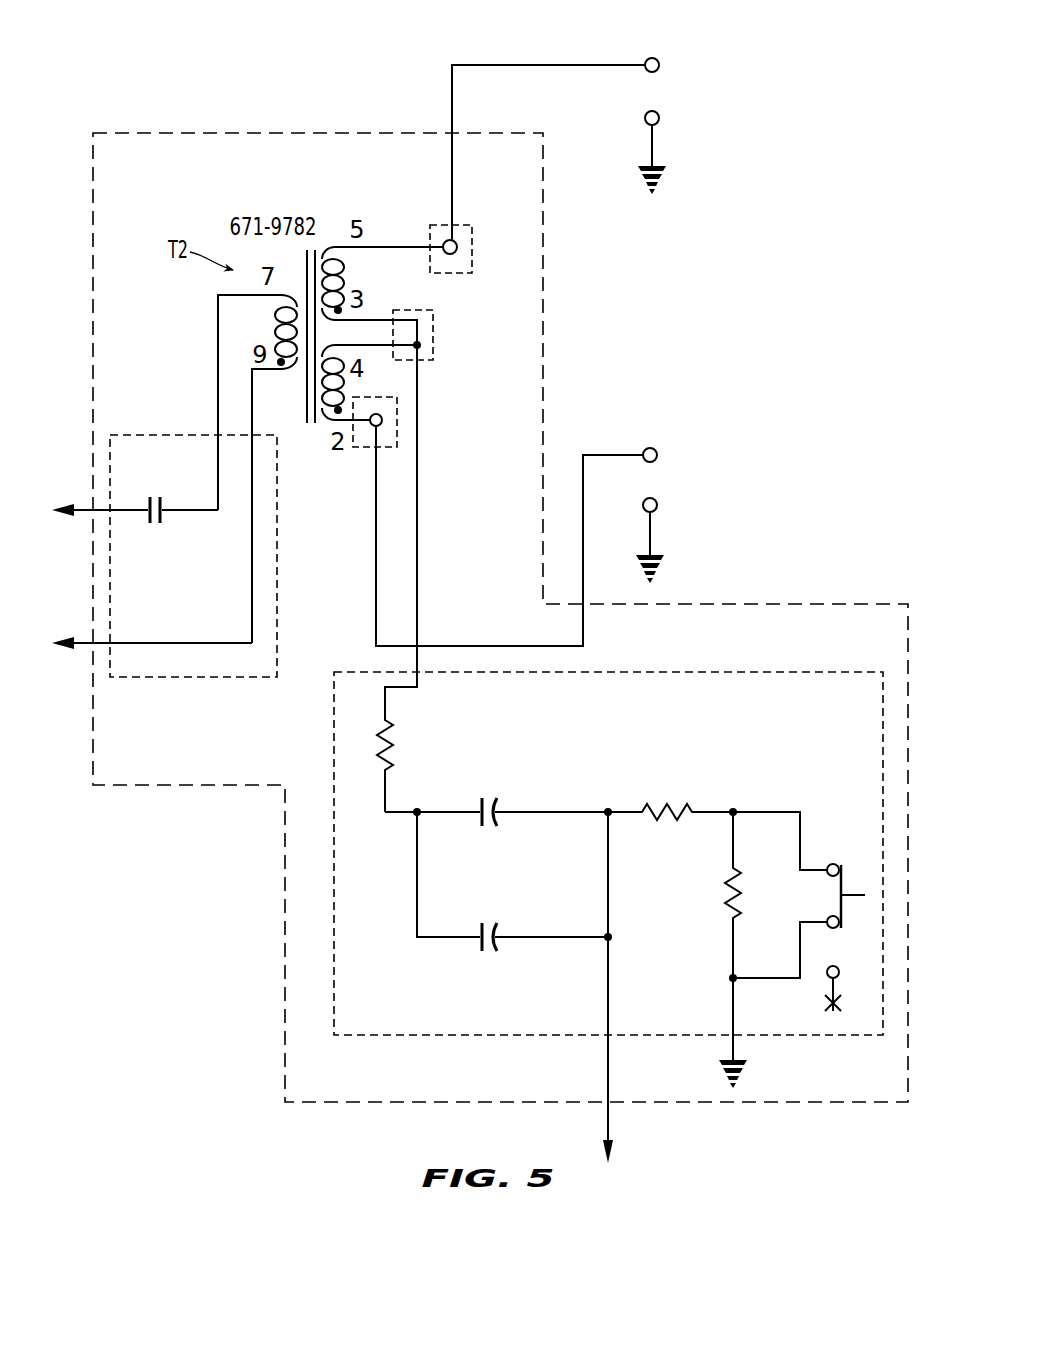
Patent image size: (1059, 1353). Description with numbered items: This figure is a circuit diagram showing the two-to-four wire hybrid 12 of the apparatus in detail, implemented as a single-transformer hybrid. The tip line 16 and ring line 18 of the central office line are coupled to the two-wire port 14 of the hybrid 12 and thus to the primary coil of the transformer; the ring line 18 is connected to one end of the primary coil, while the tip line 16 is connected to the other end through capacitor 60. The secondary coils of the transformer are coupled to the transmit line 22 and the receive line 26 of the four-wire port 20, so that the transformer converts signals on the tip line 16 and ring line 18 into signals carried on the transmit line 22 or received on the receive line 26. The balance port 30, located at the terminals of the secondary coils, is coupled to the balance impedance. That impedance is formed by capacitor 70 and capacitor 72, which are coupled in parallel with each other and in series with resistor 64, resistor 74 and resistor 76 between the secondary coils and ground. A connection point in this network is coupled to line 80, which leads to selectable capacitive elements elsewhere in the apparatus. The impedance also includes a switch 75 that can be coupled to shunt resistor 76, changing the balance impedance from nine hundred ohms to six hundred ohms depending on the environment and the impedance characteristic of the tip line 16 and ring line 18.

The 2–4 wire hybrid 12 is at (543, 355).
The 2-wire port 14 is at (193, 680).
The tip line 16 is at (80, 509).
The ring line 18 is at (80, 642).
The 4-wire port 20 is at (430, 225).
The transmit line 22 is at (537, 65).
The receive line 26 is at (585, 620).
The balance port 30 is at (258, 963).
The capacitor 60 is at (164, 521).
The resistor 64 is at (380, 770).
The capacitor 70 is at (498, 822).
The capacitor 72 is at (498, 947).
The resistor 74 is at (668, 822).
The switch 75 is at (857, 920).
The resistor 76 is at (740, 910).
The line 80 is at (610, 1120).